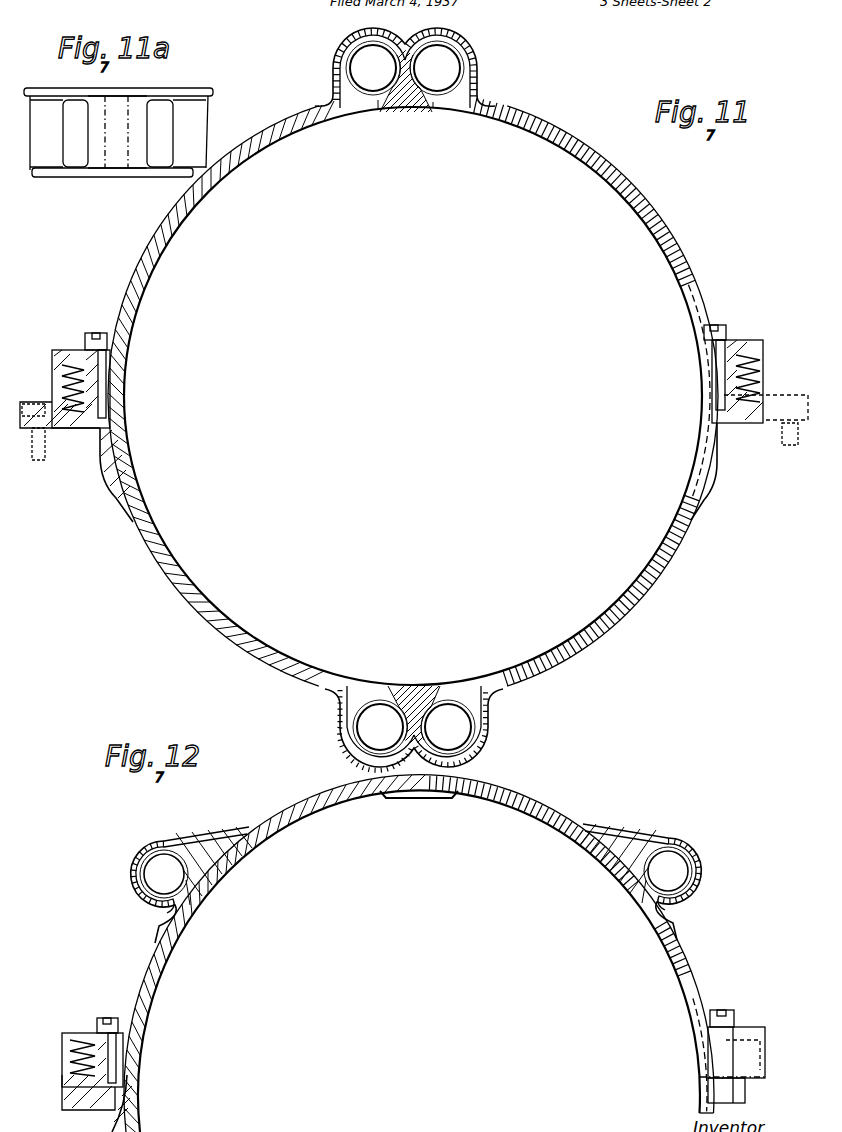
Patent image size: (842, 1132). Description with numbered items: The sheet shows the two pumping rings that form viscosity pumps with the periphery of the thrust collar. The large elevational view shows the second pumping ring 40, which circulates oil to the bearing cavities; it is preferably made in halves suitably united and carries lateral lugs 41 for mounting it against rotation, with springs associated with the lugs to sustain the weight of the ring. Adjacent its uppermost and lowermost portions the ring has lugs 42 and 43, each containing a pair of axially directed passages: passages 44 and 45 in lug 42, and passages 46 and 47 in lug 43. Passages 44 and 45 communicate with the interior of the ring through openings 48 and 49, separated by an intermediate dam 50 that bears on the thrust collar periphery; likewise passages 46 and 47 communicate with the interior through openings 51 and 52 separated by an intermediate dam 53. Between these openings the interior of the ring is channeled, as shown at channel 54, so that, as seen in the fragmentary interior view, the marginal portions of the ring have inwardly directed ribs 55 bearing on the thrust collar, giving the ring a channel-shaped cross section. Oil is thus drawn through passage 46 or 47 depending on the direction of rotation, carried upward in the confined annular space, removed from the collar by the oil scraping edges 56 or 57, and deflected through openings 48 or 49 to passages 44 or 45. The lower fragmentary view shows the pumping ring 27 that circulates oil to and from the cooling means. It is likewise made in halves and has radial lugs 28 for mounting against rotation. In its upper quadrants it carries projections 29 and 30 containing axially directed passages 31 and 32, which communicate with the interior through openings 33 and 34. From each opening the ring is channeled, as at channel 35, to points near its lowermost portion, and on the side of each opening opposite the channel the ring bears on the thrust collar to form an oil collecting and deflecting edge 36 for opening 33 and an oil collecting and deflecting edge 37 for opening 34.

In FIG. 12, the pumping ring 27 is at (506, 800).
In FIG. 12, the radial lugs 28 is at (64, 1048).
In FIG. 12, the projection 29 is at (622, 852).
In FIG. 12, the projection 30 is at (220, 852).
In FIG. 12, the axially directed passage 31 is at (684, 868).
In FIG. 12, the axially directed passage 32 is at (150, 878).
In FIG. 12, the opening 33 is at (688, 908).
In FIG. 12, the opening 34 is at (176, 907).
In FIG. 12, the channel 35 is at (674, 958).
In FIG. 12, the oil collecting and deflecting edge 36 is at (622, 887).
In FIG. 12, the oil collecting and deflecting edge 37 is at (196, 897).
In FIG. 11, the second pumping ring 40 is at (568, 645).
In FIG. 11, the lateral lugs 41 is at (56, 378).
In FIG. 11, the lug 42 is at (468, 80).
In FIG. 11, the lug 43 is at (482, 740).
In FIG. 11, the axially directed passage 44 is at (362, 68).
In FIG. 11, the axially directed passage 45 is at (452, 60).
In FIG. 11, the axially directed passage 46 is at (376, 730).
In FIG. 11, the axially directed passage 47 is at (462, 727).
In FIG. 11, the opening 48 is at (356, 102).
In FIG. 11, the opening 49 is at (450, 102).
In FIG. 11, the intermediate dam 50 is at (406, 112).
In FIG. 11A, the opening 51 is at (80, 152).
In FIG. 11, the opening 51 is at (370, 692).
In FIG. 11A, the opening 52 is at (155, 150).
In FIG. 11, the opening 52 is at (468, 690).
In FIG. 11A, the intermediate dam 53 is at (133, 115).
In FIG. 11, the intermediate dam 53 is at (427, 690).
In FIG. 11, the channel 54 is at (133, 482).
In FIG. 11A, the inwardly directed ribs 55 is at (36, 93).
In FIG. 11, the oil scraping edge 56 is at (378, 104).
In FIG. 11, the oil scraping edge 57 is at (433, 106).